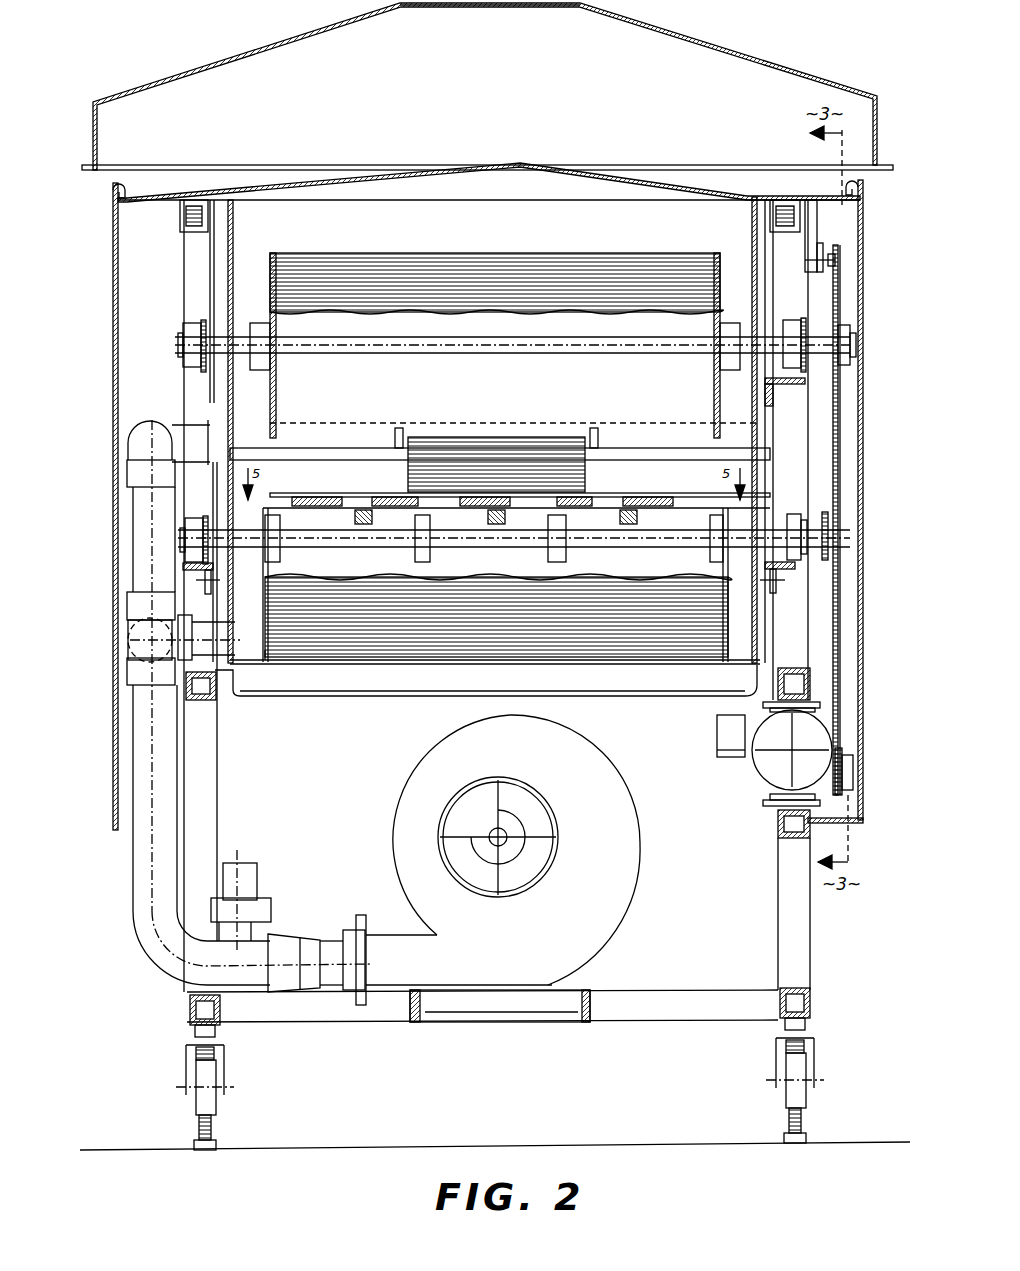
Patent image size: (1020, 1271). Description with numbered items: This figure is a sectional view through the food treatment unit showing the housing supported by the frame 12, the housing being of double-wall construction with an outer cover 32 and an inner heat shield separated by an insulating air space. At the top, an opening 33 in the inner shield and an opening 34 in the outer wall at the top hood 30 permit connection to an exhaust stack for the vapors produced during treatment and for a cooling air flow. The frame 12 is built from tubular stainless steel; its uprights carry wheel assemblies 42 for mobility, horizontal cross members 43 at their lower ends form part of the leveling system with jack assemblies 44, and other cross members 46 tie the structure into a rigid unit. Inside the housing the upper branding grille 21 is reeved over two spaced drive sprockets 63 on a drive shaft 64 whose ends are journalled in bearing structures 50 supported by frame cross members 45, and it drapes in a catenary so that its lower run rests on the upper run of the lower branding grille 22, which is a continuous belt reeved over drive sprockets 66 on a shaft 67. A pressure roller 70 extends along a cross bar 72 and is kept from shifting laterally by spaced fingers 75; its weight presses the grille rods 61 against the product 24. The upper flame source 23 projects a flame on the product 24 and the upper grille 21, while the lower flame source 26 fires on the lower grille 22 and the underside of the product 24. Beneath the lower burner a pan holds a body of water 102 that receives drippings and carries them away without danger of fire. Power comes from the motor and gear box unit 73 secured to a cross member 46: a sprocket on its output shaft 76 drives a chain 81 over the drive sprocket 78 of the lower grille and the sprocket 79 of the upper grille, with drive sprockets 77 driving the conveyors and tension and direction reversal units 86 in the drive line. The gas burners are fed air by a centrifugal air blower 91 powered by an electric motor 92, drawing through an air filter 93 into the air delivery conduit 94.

The frame 12 is at (218, 777).
The upper branding grille 21 is at (612, 255).
The lower branding grille 22 is at (378, 660).
The upper flame source 23 is at (203, 425).
The product 24 is at (510, 530).
The lower flame source 26 is at (258, 657).
The top hood 30 is at (207, 62).
The outer cover 32 is at (113, 300).
The opening in inner shield 33 is at (510, 166).
The opening in outer wall 34 is at (430, 6).
The wheel assembly 42 is at (198, 1108).
The horizontal cross member 43 is at (190, 1022).
The jack assembly 44 is at (212, 1135).
The frame cross member 45 is at (190, 392).
The cross member 46 is at (184, 232).
The bearing structure 50 is at (190, 325).
The grille rods 61 is at (357, 493).
The drive sprocket 63 is at (712, 396).
The drive shaft 64 is at (850, 332).
The drive sprocket 66 is at (280, 557).
The shaft 67 is at (380, 538).
The pressure roller 70 is at (522, 440).
The cross bar 72 is at (330, 448).
The motor and gear box unit 73 is at (768, 772).
The finger 75 is at (400, 428).
The output shaft 76 is at (843, 768).
The drive sprocket 77 is at (850, 784).
The drive sprocket 78 is at (838, 512).
The sprocket 79 is at (840, 420).
The drive chain 81 is at (842, 460).
The tension and direction reversal unit 86 is at (810, 230).
The centrifugal air blower 91 is at (608, 902).
The electric motor 92 is at (548, 830).
The air filter 93 is at (258, 908).
The air delivery conduit 94 is at (133, 912).
The body of water 102 is at (640, 698).